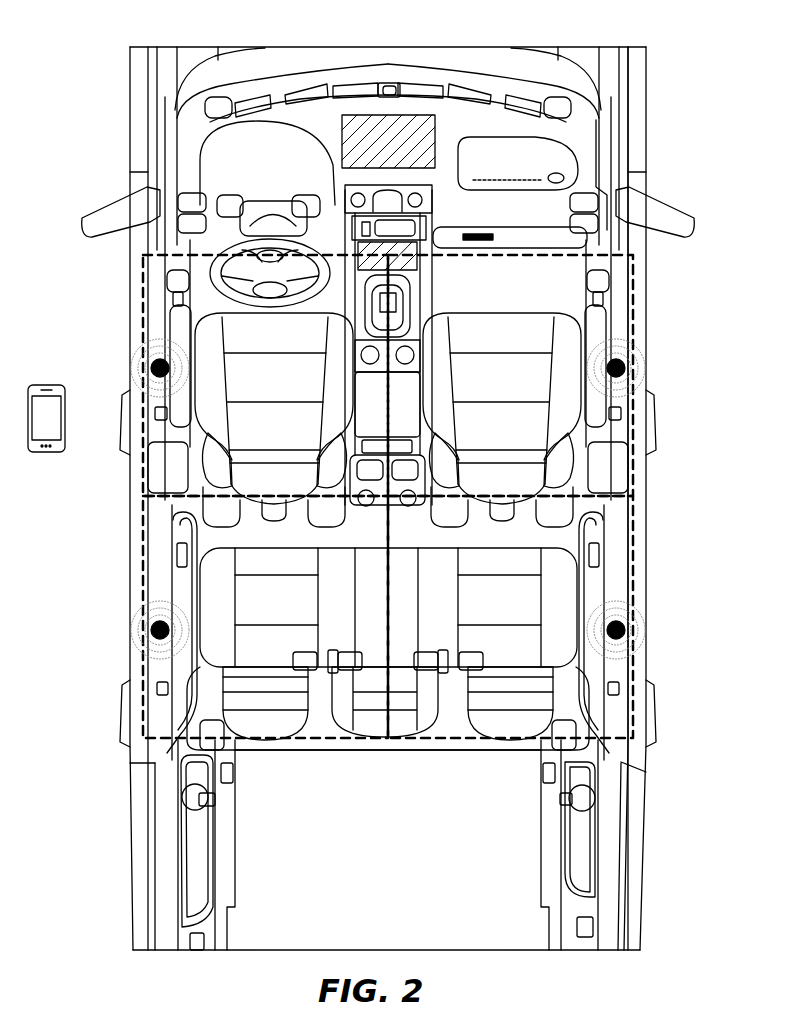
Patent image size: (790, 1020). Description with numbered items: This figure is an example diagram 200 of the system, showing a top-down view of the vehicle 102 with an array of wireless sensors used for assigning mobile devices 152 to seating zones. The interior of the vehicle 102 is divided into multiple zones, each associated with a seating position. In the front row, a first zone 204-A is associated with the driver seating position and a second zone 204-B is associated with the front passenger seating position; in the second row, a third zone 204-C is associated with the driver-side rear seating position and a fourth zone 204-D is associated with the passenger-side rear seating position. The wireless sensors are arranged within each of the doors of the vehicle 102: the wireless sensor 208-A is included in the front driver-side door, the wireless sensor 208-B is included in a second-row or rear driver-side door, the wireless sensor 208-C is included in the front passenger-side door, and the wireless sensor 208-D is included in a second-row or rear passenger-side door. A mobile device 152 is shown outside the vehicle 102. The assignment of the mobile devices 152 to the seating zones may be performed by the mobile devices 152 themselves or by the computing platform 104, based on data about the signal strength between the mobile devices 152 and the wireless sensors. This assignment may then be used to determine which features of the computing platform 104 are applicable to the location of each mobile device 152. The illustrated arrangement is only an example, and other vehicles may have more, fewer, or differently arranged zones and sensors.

The example diagram 200 is at (100, 27).
The vehicle 102 is at (130, 130).
The computing platform 104 is at (440, 138).
The mobile device 152 is at (46, 385).
The first zone 204-A is at (140, 296).
The second zone 204-B is at (635, 296).
The third zone 204-C is at (140, 532).
The fourth zone 204-D is at (635, 532).
The wireless sensor 208-A is at (148, 358).
The wireless sensor 208-B is at (628, 358).
The wireless sensor 208-C is at (148, 625).
The wireless sensor 208-D is at (628, 625).